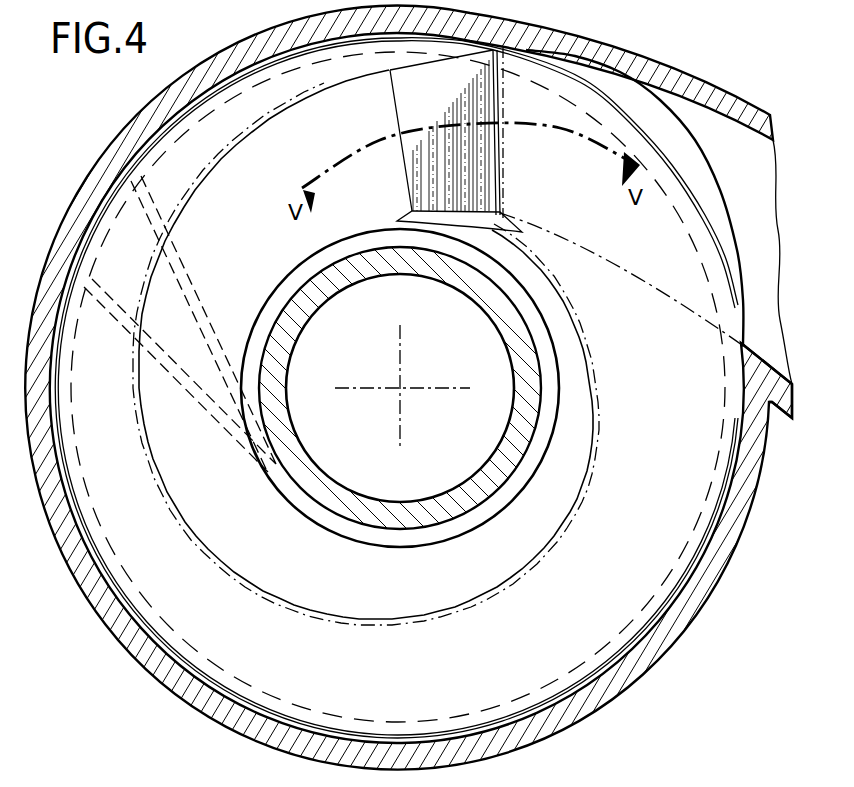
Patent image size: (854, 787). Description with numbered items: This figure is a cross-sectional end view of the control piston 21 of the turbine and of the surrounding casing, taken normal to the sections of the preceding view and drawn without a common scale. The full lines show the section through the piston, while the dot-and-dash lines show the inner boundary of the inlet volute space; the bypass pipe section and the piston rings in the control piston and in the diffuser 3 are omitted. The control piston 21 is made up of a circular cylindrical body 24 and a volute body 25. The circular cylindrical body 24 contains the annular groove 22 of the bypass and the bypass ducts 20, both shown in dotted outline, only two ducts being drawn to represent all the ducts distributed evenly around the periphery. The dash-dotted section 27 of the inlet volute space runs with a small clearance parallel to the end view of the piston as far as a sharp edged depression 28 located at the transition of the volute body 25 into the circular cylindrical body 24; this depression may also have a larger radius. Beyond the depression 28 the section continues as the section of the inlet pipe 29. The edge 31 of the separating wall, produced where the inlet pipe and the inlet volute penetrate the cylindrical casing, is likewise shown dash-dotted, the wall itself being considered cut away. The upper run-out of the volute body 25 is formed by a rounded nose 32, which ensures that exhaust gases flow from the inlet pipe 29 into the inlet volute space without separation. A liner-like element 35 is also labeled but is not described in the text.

The diffuser 3 is at (287, 352).
The bypass duct 20 is at (186, 291).
The control piston 21 is at (324, 579).
The annular groove 22 is at (318, 46).
The circular cylindrical body 24 is at (712, 540).
The volute body 25 is at (589, 362).
The section of the inlet volute space 27 is at (600, 437).
The sharp edged depression 28 is at (505, 172).
The inlet pipe 29 is at (760, 170).
The edge of the separating wall 31 is at (505, 90).
The rounded nose 32 is at (467, 98).
The liner 35 is at (221, 86).